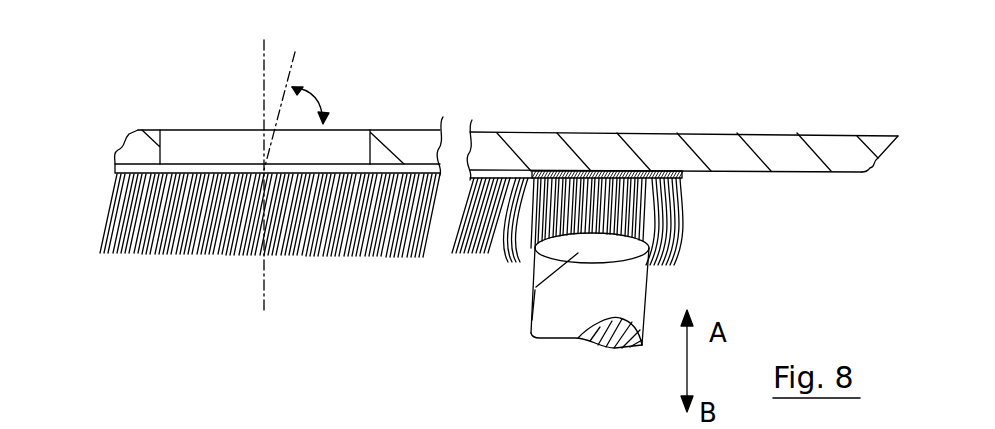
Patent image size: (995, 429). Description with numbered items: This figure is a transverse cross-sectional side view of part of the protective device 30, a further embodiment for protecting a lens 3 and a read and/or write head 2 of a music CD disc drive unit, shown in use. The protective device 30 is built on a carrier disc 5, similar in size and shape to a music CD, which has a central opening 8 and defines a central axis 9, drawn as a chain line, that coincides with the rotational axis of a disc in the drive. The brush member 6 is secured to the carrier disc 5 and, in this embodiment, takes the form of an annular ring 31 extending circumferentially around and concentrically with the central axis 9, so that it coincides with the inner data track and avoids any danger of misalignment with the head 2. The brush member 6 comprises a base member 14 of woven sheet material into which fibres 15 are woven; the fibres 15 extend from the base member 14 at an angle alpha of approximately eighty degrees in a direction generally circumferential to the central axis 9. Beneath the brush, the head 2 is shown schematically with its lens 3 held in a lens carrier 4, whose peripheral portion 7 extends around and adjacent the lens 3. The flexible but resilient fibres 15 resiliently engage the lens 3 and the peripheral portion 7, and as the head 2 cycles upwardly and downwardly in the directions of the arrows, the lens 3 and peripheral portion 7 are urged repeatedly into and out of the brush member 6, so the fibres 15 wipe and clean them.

The read and/or write optical head 2 is at (548, 333).
The lens 3 is at (536, 288).
The lens carrier 4 is at (540, 310).
The carrier disc 5 is at (867, 137).
The brush member 6 is at (657, 210).
The peripheral portion of the lens carrier 7 is at (657, 270).
The central opening 8 is at (160, 143).
The central axis 9 is at (263, 67).
The base member 14 is at (687, 173).
The fibres 15 is at (665, 240).
The protective device 30 is at (205, 273).
The annular ring 31 is at (387, 220).